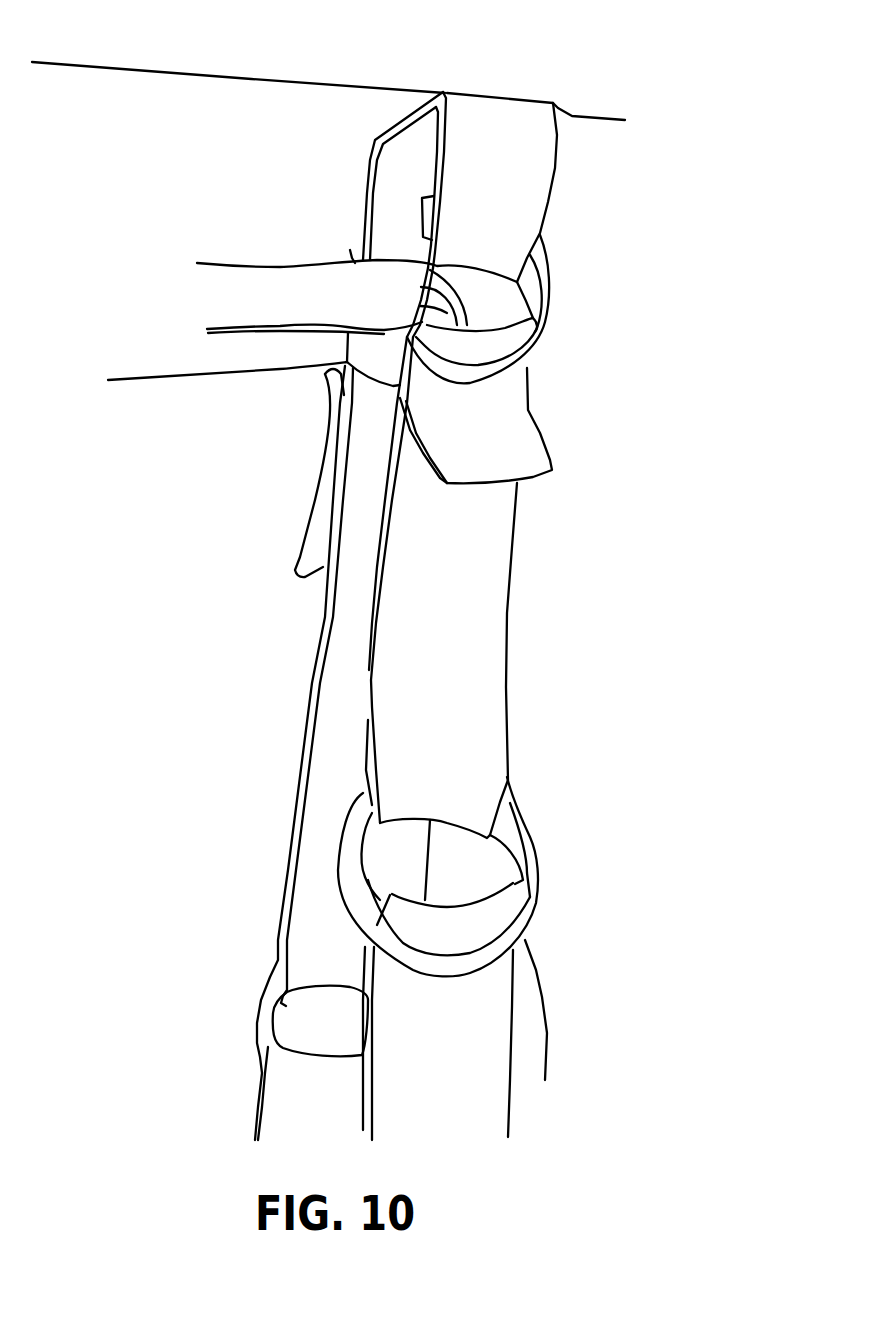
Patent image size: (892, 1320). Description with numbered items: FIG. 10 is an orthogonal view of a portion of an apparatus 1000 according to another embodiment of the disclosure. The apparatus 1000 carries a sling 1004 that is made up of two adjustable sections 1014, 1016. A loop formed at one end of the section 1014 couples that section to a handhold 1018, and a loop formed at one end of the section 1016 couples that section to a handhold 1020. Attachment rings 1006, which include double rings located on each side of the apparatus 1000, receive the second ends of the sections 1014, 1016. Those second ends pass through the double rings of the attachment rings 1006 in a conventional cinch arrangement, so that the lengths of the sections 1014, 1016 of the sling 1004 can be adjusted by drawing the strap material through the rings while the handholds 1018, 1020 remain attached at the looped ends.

The apparatus 1000 is at (558, 72).
The sling 1004 is at (612, 598).
The attachment rings 1006 is at (552, 278).
The adjustable section 1014 is at (370, 623).
The adjustable section 1016 is at (315, 683).
The handhold 1018 is at (537, 847).
The handhold 1020 is at (257, 1025).